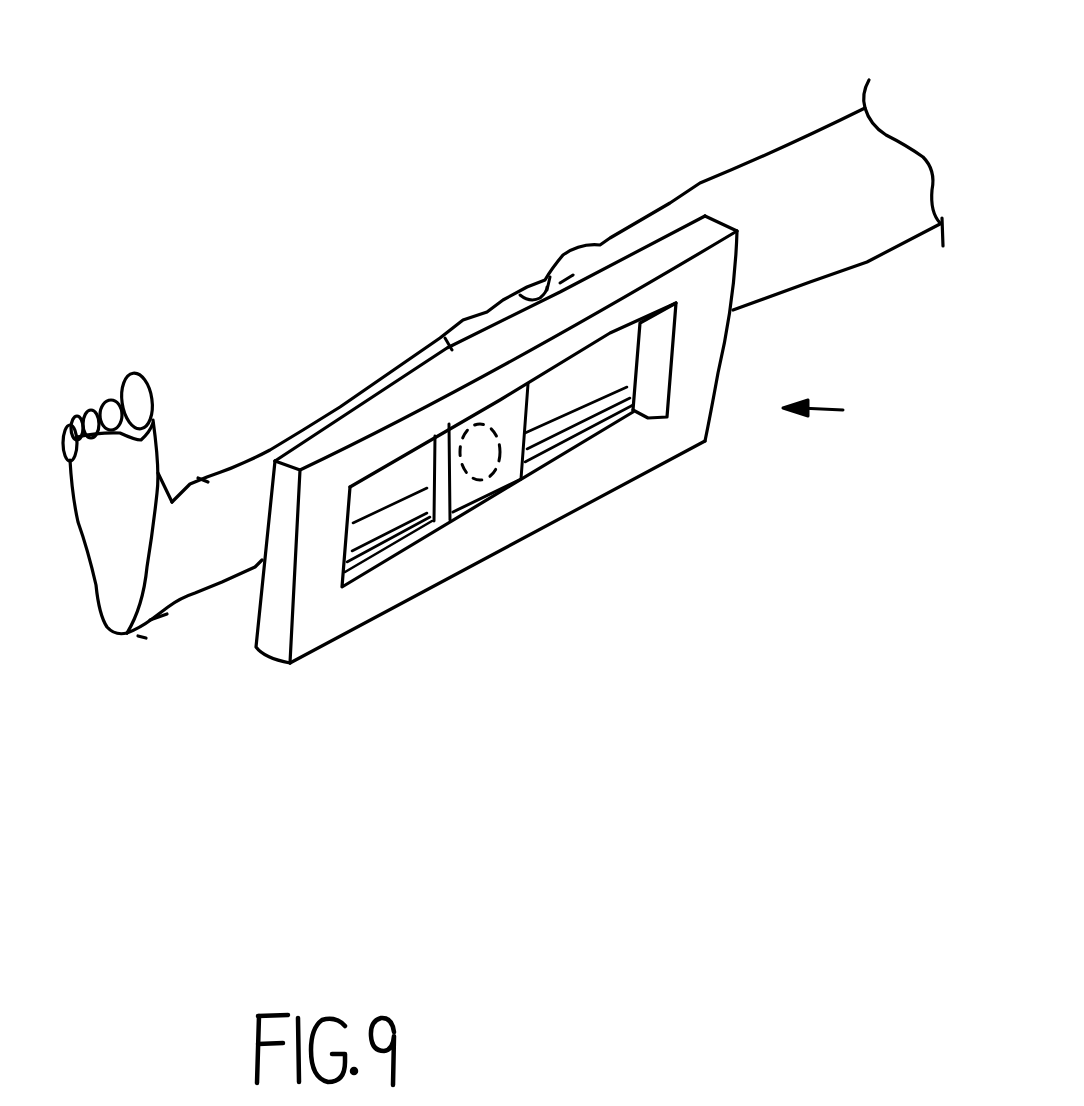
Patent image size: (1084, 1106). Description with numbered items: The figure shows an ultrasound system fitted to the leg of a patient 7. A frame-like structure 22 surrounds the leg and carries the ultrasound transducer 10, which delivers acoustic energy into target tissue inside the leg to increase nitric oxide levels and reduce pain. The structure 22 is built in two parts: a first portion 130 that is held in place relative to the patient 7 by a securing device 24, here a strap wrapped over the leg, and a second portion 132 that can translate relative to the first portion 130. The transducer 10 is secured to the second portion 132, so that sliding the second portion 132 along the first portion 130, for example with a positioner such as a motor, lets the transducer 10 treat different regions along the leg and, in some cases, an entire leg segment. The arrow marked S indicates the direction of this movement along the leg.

The patient 7 is at (787, 170).
The ultrasound transducer 10 is at (292, 268).
The structure 22 is at (687, 440).
The securing device 24 is at (487, 306).
The first portion 130 is at (470, 543).
The second portion 132 is at (513, 477).
The direction of view S is at (856, 424).